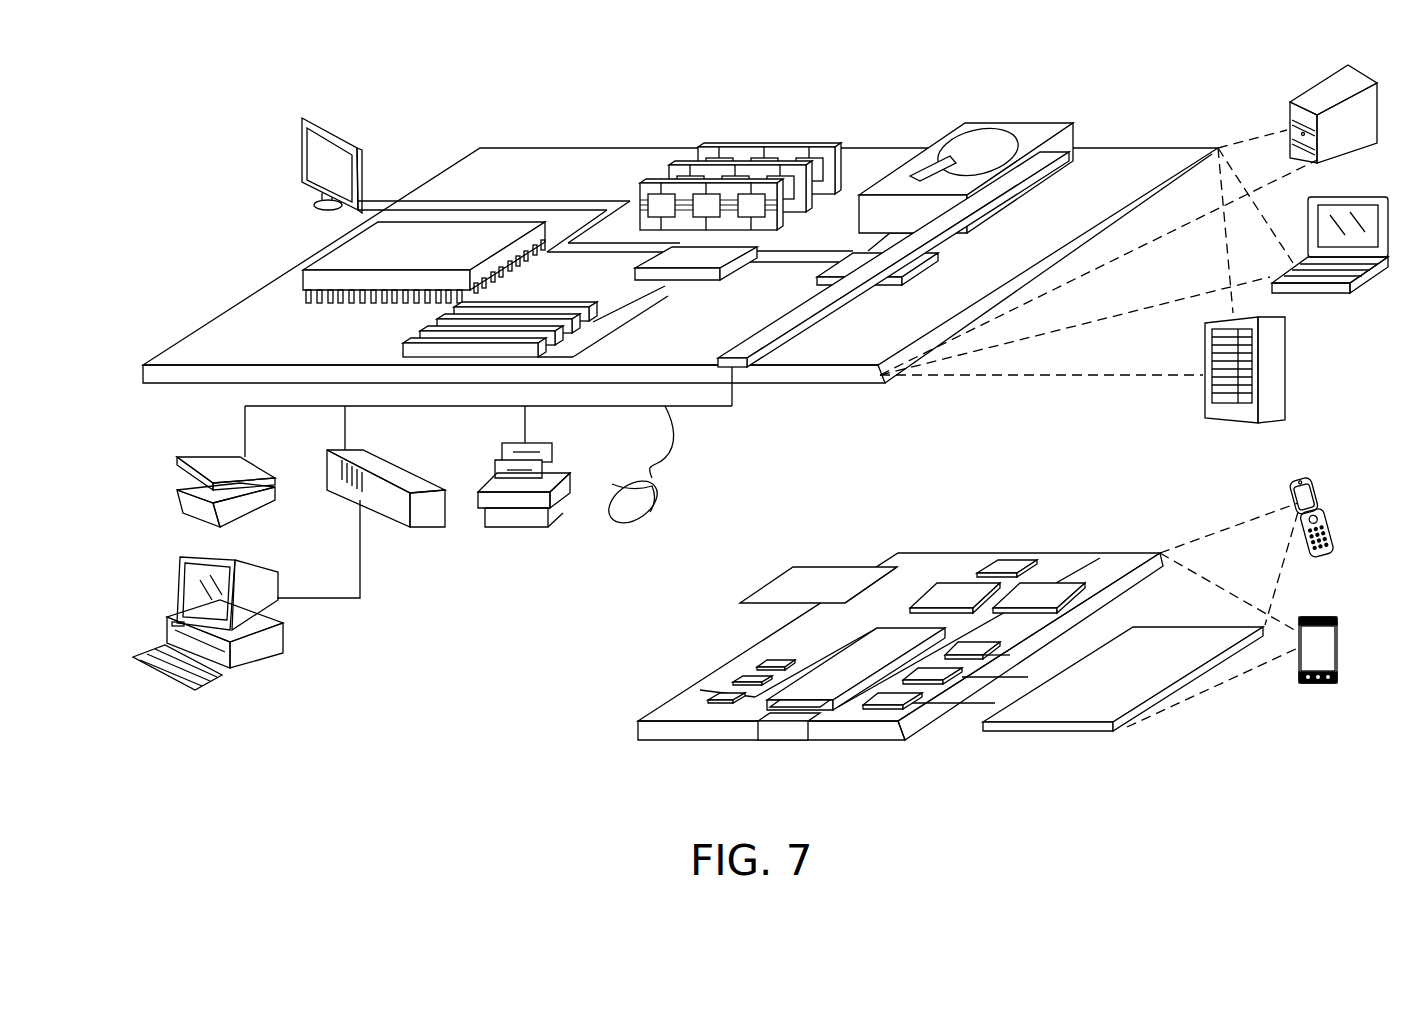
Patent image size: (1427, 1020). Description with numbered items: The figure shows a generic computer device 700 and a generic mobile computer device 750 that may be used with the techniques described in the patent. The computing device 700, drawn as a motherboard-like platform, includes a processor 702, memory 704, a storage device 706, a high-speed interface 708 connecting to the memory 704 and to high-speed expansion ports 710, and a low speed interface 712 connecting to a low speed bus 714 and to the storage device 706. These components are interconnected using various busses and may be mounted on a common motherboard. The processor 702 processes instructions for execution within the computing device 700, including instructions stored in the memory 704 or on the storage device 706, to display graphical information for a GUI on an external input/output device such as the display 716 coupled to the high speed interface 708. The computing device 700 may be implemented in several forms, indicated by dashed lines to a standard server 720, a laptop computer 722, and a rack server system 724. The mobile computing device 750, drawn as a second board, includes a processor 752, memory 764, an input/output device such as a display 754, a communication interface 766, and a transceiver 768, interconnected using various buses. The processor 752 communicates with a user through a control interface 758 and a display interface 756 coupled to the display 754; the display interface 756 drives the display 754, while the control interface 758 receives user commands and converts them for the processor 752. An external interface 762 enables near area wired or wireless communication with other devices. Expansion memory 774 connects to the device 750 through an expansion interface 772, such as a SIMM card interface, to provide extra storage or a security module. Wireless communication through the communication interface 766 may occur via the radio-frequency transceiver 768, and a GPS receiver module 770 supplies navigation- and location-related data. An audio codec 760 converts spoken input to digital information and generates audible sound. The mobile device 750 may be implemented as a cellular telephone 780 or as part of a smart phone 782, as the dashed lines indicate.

The computing device 700 is at (428, 92).
The processor 702 is at (330, 253).
The memory 704 is at (773, 140).
The storage device 706 is at (1008, 123).
The high-speed interface 708 is at (708, 255).
The high-speed expansion ports 710 is at (428, 328).
The low speed interface 712 is at (850, 263).
The low speed bus 714 is at (738, 353).
The display 716 is at (306, 117).
The standard server 720 is at (1312, 93).
The laptop computer 722 is at (1363, 197).
The rack server system 724 is at (1287, 371).
The mobile computing device 750 is at (590, 752).
The processor 752 is at (826, 673).
The display 754 is at (1163, 641).
The display interface 756 is at (902, 698).
The control interface 758 is at (940, 672).
The audio codec 760 is at (978, 643).
The external interface 762 is at (785, 727).
The memory 764 is at (738, 678).
The communication interface 766 is at (957, 585).
The transceiver 768 is at (1045, 586).
The GPS receiver module 770 is at (1007, 560).
The expansion interface 772 is at (881, 566).
The expansion memory 774 is at (800, 567).
The cellular telephone 780 is at (1310, 478).
The smart phone 782 is at (1312, 615).